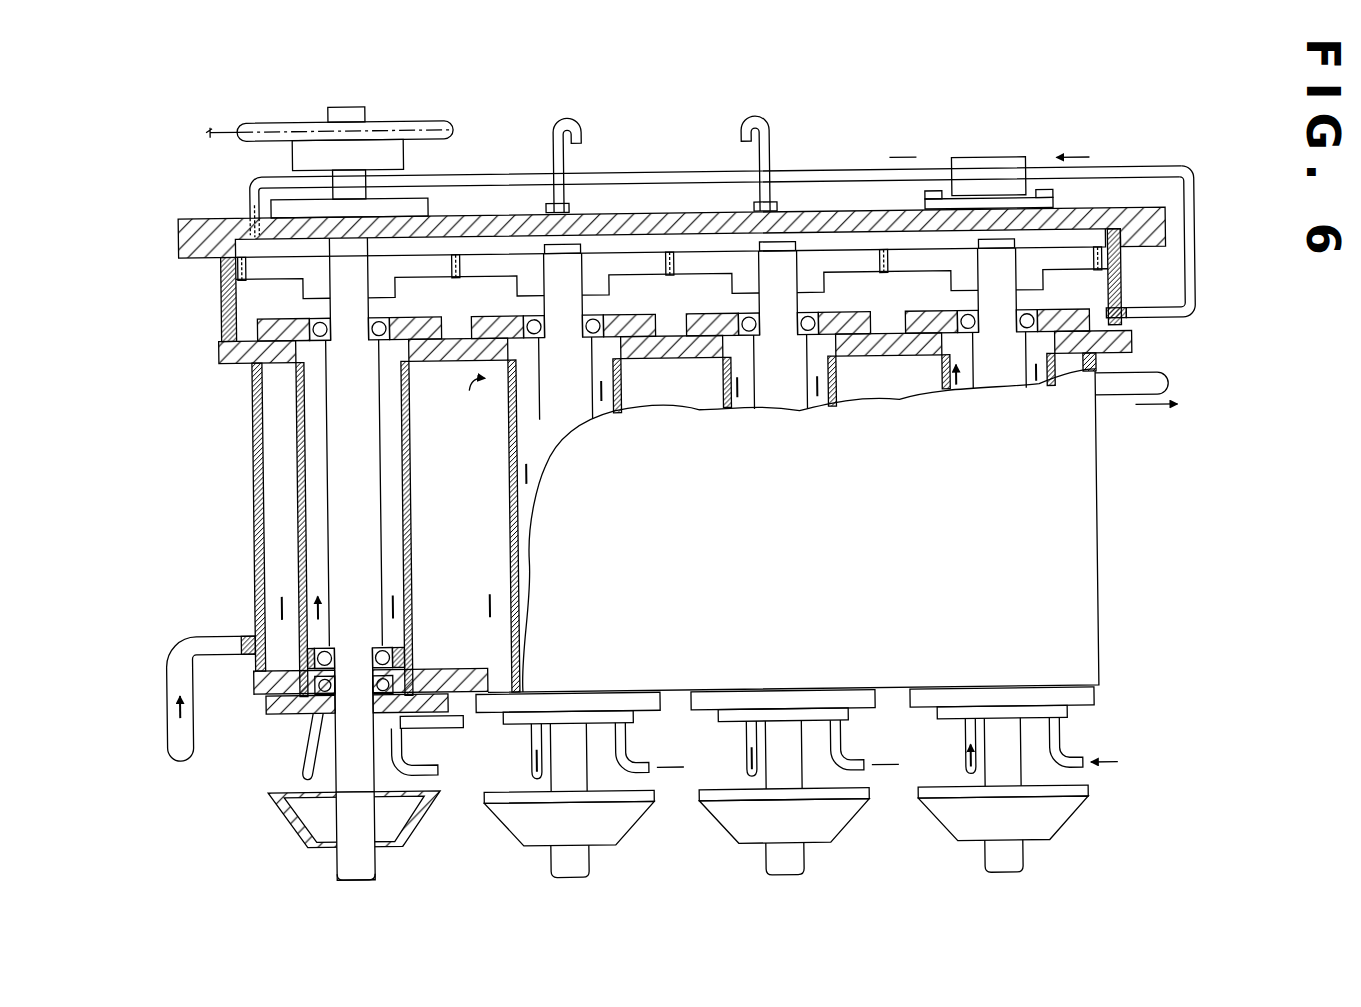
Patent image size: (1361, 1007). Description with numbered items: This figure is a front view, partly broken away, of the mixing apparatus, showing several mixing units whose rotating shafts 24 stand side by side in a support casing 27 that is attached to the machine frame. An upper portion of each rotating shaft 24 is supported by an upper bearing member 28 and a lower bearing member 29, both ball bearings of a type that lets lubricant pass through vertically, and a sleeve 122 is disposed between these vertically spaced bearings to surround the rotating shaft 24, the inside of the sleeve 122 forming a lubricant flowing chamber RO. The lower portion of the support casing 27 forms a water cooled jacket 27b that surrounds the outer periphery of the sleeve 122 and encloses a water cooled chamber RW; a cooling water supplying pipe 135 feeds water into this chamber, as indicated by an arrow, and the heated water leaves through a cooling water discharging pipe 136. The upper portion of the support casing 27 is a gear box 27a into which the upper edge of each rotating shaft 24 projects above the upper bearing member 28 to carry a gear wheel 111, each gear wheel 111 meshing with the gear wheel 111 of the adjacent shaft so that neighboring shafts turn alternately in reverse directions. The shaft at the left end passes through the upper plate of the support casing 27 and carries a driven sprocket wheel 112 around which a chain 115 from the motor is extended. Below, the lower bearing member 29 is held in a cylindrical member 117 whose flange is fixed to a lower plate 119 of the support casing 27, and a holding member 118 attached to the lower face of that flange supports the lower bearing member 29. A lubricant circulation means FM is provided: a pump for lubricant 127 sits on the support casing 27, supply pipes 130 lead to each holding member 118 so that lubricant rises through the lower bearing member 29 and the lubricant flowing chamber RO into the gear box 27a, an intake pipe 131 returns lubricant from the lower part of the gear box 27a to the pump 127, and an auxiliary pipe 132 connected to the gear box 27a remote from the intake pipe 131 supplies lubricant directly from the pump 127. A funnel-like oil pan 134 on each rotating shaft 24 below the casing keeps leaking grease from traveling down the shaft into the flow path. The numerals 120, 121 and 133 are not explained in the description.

The driven sprocket wheel 112 is at (405, 128).
The chain 115 is at (225, 128).
The auxiliary pipe 132 is at (737, 217).
The lubricant circulation means FM is at (1162, 170).
The intake pipe 131 is at (1138, 325).
The pump for lubricant 127 is at (975, 160).
The gear box 27a is at (222, 306).
The gear wheel 111 is at (303, 280).
The upper bearing member 28 is at (385, 318).
The lower plate 120 is at (430, 358).
The sleeve 122 is at (410, 492).
The flow opening 121 is at (472, 388).
The rotating shaft 24 is at (383, 533).
The lubricant flowing chamber RO is at (392, 446).
The water cooled chamber RW is at (275, 572).
The support casing 27 is at (621, 525).
The water cooled jacket 27b is at (253, 560).
The lower bearing member 29 is at (408, 648).
The lower plate 119 is at (460, 700).
The cylindrical member 117 is at (445, 709).
The holding member 118 is at (400, 725).
The drain pipe 133 is at (305, 752).
The supply pipe 130 is at (434, 768).
The funnel-like oil pan 134 is at (408, 830).
The cooling water supplying pipe 135 is at (198, 745).
The cooling water discharging pipe 136 is at (1165, 388).